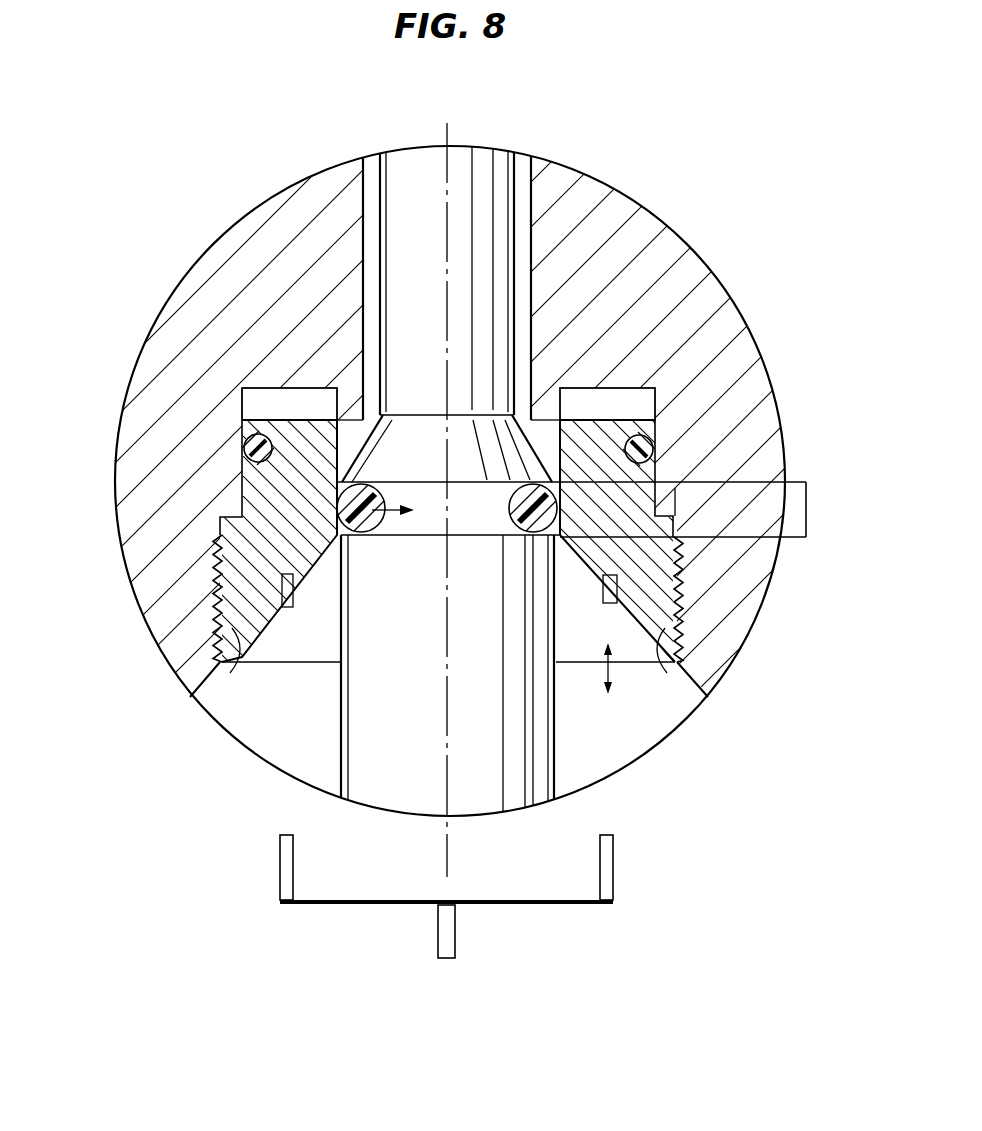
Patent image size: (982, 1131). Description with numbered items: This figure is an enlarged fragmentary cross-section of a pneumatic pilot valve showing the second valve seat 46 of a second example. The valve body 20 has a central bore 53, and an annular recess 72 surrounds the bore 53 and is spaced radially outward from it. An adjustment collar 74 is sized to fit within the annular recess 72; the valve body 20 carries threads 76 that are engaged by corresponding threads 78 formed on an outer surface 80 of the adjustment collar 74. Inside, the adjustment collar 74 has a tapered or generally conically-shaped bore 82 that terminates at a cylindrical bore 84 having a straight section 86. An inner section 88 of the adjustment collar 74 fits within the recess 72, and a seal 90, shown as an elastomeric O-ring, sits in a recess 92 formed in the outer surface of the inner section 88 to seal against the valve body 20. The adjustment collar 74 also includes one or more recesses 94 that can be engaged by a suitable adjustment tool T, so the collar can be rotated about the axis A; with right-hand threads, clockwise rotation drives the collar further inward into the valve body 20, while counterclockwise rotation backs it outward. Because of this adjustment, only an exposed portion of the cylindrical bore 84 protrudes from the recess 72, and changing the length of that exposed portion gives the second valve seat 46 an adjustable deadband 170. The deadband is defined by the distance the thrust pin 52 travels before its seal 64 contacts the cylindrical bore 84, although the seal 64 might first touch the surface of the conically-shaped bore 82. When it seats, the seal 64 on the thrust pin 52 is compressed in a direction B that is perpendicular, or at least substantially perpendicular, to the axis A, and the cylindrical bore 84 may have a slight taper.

The valve body 20 is at (677, 277).
The second valve seat 46 is at (350, 428).
The thrust pin 52 is at (483, 272).
The bore 53 is at (361, 205).
The seal 64 is at (337, 506).
The annular recess 72 is at (620, 395).
The adjustment collar 74 is at (247, 600).
The threads 76 is at (683, 550).
The threads 78 is at (667, 625).
The outer surface 80 is at (587, 567).
The conically-shaped bore 82 is at (580, 560).
The cylindrical bore 84 is at (560, 537).
The straight section 86 is at (806, 505).
The inner section 88 is at (613, 421).
The seal 90 is at (650, 440).
The recess 92 is at (662, 468).
The recesses 94 is at (285, 607).
The adjustable deadband 170 is at (518, 545).
The axis A is at (447, 773).
The direction B is at (392, 515).
The adjustment tool T is at (613, 880).